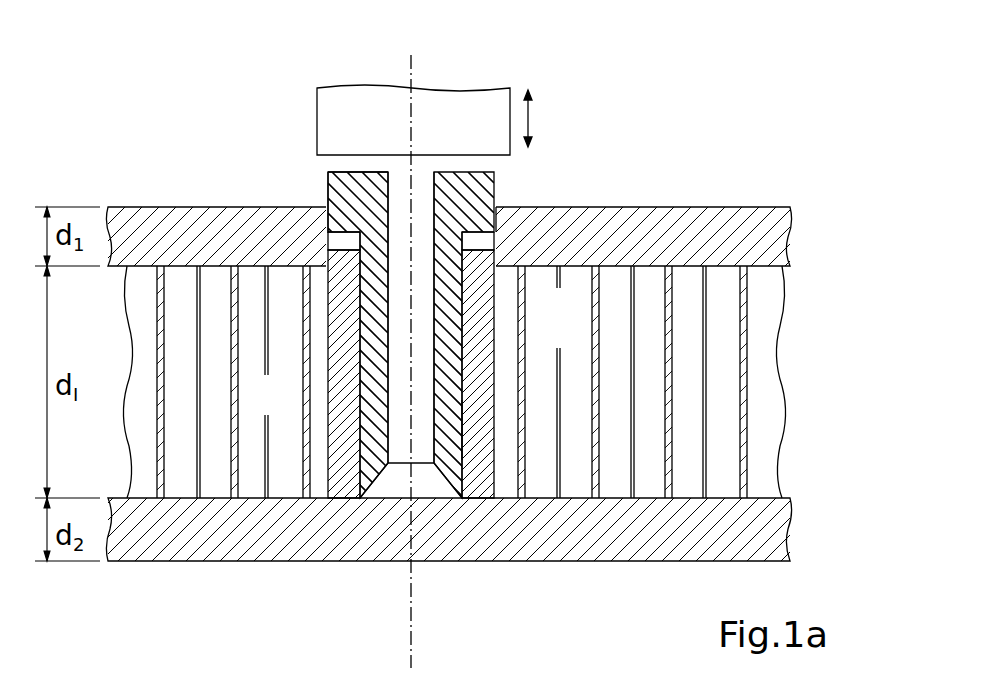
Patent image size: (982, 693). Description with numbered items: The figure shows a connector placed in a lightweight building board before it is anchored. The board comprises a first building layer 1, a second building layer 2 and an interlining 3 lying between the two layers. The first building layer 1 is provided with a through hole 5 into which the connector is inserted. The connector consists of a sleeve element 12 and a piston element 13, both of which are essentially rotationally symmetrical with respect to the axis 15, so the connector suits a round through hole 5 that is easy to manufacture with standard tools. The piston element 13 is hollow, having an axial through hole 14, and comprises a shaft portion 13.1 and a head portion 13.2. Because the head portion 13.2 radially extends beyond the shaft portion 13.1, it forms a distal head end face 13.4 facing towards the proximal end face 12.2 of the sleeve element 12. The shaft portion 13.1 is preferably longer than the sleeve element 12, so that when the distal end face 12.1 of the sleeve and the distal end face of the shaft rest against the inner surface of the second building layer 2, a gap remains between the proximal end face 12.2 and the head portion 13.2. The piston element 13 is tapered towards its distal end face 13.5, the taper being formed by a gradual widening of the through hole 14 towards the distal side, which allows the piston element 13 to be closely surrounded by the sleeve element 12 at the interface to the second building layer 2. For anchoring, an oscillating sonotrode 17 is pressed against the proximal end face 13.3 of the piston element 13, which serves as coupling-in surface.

The first building layer 1 is at (777, 238).
The second building layer 2 is at (770, 523).
The interlining 3 is at (763, 363).
The through hole 5 is at (499, 200).
The sleeve element 12 is at (330, 396).
The distal end face of the sleeve 12.1 is at (474, 499).
The proximal end face of the sleeve element 12.2 is at (350, 246).
The piston element 13 is at (485, 188).
The shaft portion 13.1 is at (340, 184).
The head portion 13.2 is at (447, 423).
The proximal end face of the piston element 13.3 is at (367, 172).
The distal head end face 13.4 is at (482, 240).
The distal end face 13.5 is at (385, 470).
The axial through hole 14 is at (422, 188).
The axis 15 is at (412, 633).
The sonotrode 17 is at (478, 97).